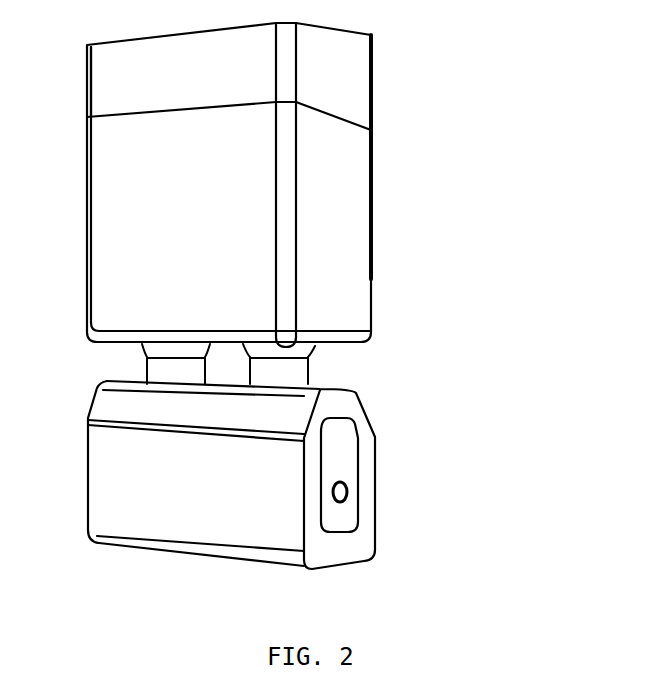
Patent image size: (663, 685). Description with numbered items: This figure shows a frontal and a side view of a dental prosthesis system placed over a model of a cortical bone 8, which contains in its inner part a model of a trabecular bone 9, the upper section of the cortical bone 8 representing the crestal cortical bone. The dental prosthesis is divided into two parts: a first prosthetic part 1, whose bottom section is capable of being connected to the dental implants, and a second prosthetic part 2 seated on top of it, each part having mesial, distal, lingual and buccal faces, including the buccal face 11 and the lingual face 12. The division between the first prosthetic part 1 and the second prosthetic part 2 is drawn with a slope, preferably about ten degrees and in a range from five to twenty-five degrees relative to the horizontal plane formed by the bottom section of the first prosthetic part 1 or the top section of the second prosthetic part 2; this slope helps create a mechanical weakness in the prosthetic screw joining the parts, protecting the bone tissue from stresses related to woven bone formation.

The first prosthetic part 1 is at (327, 241).
The second prosthetic part 2 is at (327, 72).
The buccal face 11 is at (376, 147).
The lingual face 12 is at (182, 222).
The model of a cortical bone 8 is at (327, 546).
The model of a trabecular bone 9 is at (347, 450).